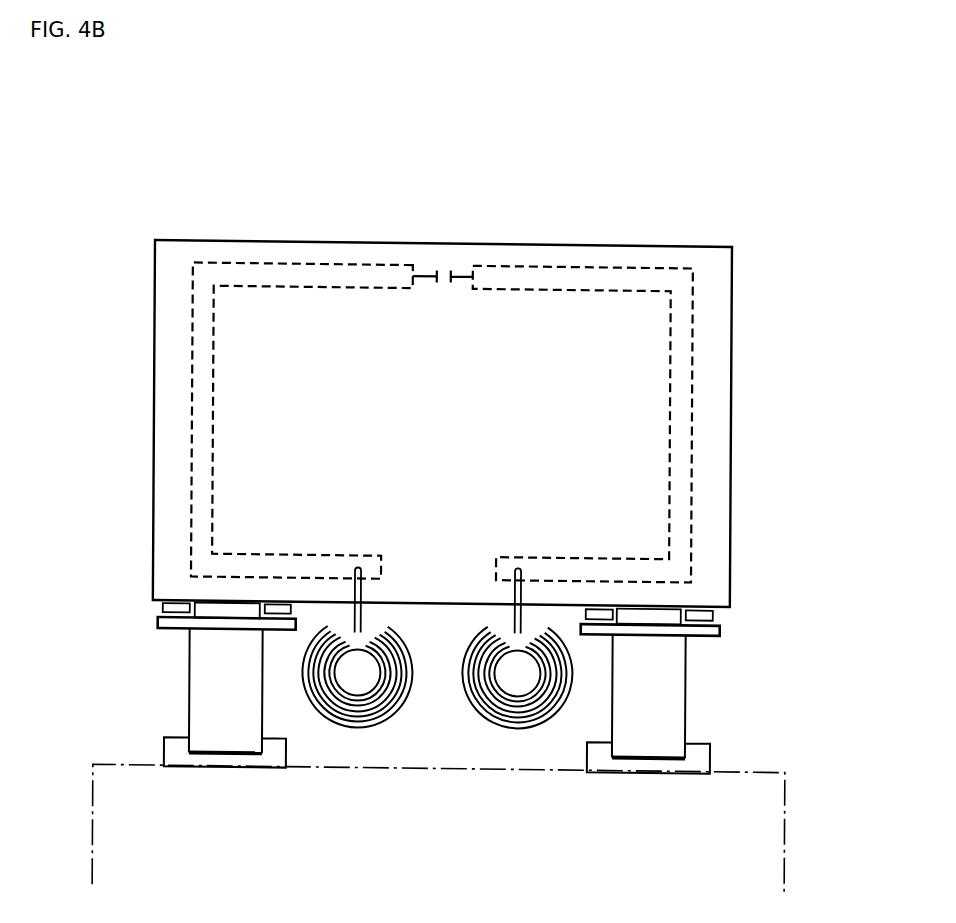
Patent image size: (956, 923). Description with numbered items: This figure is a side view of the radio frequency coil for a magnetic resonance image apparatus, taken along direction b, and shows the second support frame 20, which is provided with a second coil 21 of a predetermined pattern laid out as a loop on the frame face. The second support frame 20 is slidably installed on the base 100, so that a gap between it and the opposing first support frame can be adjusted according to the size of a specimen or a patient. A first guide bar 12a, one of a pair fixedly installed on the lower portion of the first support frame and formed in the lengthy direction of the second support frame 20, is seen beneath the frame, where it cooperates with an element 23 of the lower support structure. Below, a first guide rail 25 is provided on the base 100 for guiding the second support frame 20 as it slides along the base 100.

The second support frame 20 is at (742, 266).
The second coil 21 is at (682, 418).
The first guide bar 12a is at (168, 607).
The terminal plate 23 is at (163, 622).
The first guide rail 25 is at (708, 748).
The base 100 is at (778, 773).